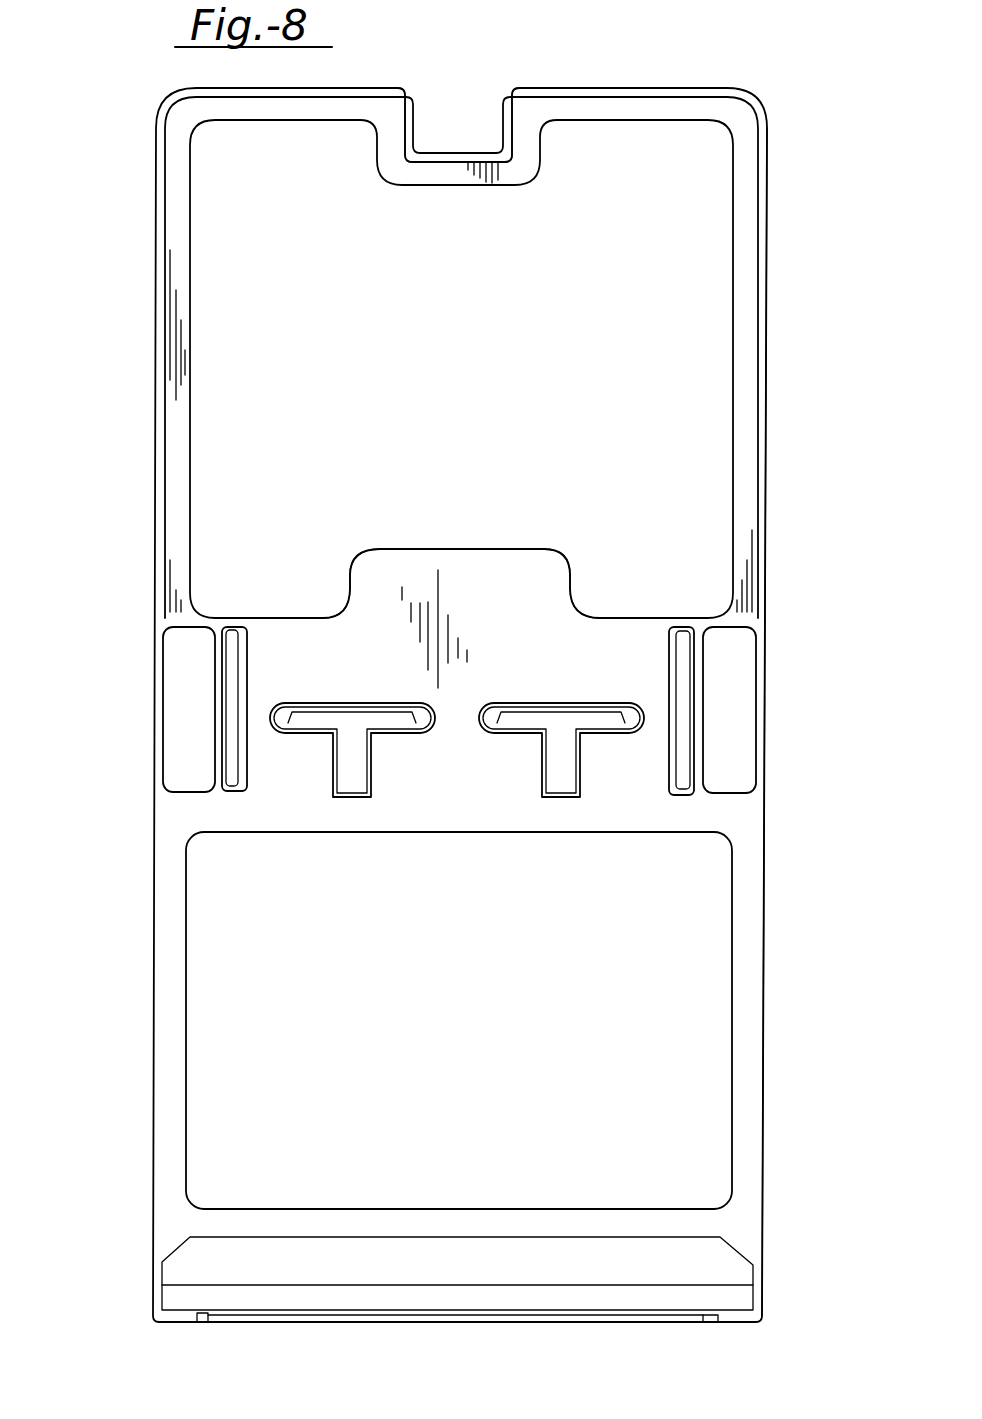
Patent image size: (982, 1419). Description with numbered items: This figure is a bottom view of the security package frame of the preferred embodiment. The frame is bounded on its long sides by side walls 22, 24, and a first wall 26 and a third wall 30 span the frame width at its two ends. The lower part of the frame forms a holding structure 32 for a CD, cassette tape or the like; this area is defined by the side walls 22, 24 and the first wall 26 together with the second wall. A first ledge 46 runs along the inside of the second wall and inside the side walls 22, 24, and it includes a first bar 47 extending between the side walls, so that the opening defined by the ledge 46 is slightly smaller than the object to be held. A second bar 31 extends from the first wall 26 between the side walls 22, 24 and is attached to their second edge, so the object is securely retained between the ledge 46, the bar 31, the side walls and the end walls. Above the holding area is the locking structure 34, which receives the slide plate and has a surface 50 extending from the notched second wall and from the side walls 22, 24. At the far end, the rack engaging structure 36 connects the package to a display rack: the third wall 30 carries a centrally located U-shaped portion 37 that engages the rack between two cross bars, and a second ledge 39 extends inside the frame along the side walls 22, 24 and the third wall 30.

The side wall 22 is at (153, 1033).
The side wall 24 is at (763, 1072).
The first wall 26 is at (515, 1323).
The third wall 30 is at (258, 90).
The second bar 31 is at (417, 1284).
The holding structure 32 is at (147, 1250).
The locking structure 34 is at (146, 727).
The rack engaging structure 36 is at (533, 86).
The U-shaped portion 37 is at (453, 165).
The second ledge 39 is at (192, 365).
The first ledge 46 is at (731, 1003).
The first bar 47 is at (475, 1208).
The surface 50 is at (487, 577).